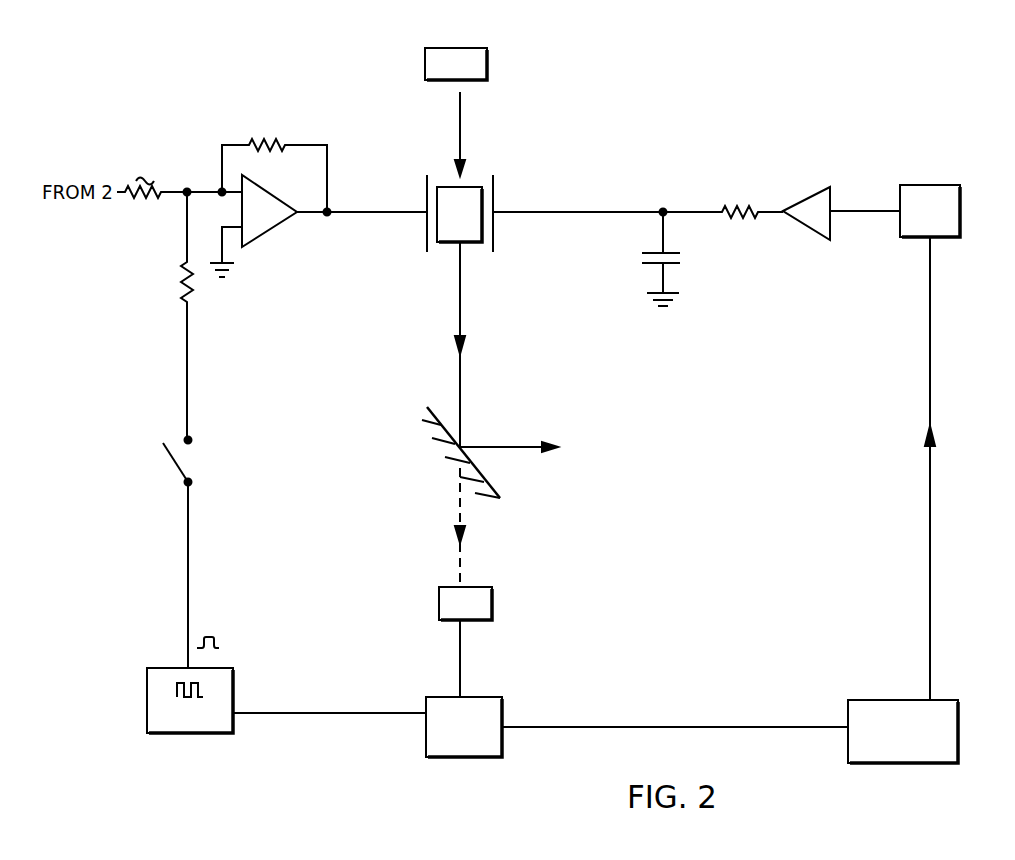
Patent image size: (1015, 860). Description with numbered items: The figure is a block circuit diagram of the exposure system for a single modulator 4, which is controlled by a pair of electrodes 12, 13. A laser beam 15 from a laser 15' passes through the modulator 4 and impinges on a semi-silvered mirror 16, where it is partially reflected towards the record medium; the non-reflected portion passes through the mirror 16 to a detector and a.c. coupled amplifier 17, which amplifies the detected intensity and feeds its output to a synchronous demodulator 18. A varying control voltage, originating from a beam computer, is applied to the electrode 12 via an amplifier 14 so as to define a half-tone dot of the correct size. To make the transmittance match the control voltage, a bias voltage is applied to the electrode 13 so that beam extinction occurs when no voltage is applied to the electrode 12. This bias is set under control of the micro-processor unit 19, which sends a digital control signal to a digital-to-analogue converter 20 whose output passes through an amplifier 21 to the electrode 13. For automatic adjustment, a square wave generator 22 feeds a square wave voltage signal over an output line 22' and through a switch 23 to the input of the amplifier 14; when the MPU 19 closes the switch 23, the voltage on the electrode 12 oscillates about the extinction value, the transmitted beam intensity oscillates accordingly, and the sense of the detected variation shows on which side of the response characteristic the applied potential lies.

The modulator 4 is at (465, 194).
The electrode 12 is at (427, 234).
The electrode 13 is at (493, 237).
The amplifier 14 is at (266, 236).
The laser beam 15 is at (480, 133).
The laser 15' is at (489, 64).
The semi-silvered mirror 16 is at (500, 491).
The a.c. coupled amplifier 17 is at (492, 602).
The synchronous demodulator 18 is at (474, 757).
The micro-processor unit 19 is at (958, 730).
The digital-to-analogue converter 20 is at (930, 185).
The amplifier 21 is at (807, 196).
The square wave generator 22 is at (190, 719).
The generator output line 22' is at (329, 741).
The switch 23 is at (170, 462).